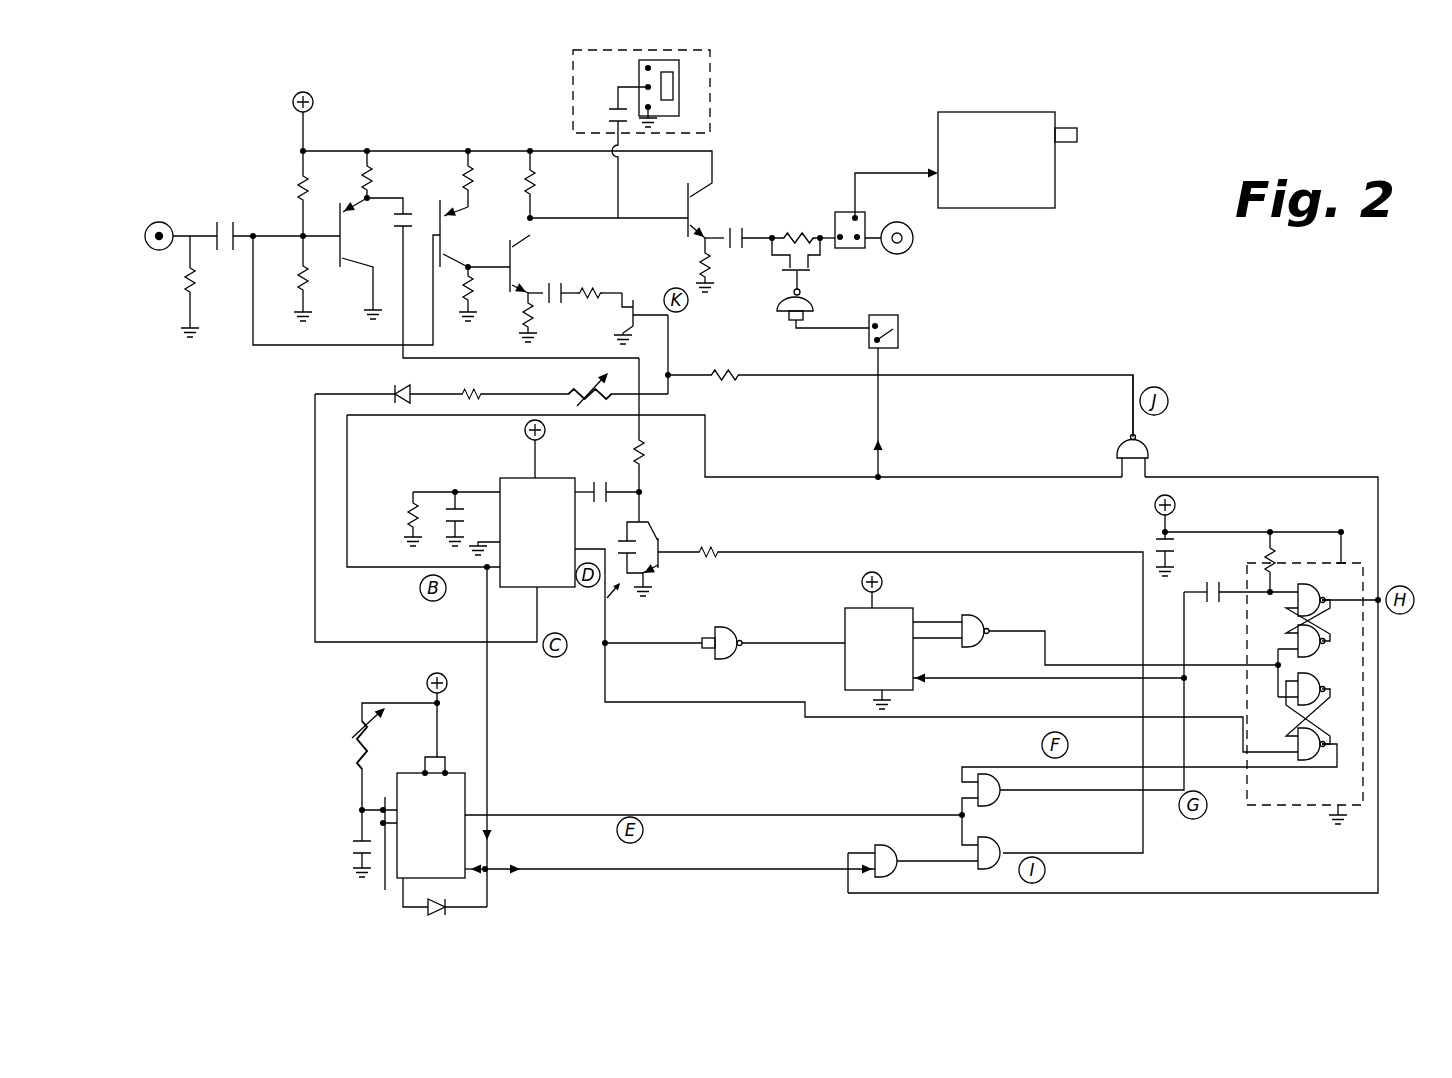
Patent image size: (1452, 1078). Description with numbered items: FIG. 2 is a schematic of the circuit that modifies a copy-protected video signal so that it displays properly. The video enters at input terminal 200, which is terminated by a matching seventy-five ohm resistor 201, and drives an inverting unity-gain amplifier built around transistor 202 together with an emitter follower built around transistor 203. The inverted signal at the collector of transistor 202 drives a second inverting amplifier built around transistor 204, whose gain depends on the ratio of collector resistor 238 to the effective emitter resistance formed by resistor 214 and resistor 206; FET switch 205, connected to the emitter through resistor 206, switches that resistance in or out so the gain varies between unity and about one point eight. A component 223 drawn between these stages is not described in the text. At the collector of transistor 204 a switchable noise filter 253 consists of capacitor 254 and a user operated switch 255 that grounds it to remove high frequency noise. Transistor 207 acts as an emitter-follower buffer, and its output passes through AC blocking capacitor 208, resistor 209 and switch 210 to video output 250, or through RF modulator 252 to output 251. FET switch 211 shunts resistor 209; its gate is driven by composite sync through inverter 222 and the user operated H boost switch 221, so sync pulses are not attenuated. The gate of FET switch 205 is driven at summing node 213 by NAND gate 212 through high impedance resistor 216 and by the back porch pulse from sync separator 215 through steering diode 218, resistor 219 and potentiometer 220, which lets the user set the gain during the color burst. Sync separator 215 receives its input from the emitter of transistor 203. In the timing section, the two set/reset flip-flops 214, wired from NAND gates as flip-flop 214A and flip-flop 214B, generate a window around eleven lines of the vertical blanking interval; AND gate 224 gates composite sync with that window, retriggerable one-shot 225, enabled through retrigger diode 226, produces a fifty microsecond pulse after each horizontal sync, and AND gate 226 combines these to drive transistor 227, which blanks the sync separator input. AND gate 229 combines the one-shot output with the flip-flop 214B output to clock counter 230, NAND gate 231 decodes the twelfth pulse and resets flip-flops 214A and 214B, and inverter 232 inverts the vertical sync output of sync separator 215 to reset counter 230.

The input terminal 200 is at (155, 222).
The matching resistor 201 is at (185, 300).
The transistor 202 is at (448, 229).
The transistor 203 is at (361, 258).
The transistor 204 is at (520, 262).
The FET switch 205 is at (633, 300).
The resistor 206 is at (592, 283).
The transistor 207 is at (714, 185).
The AC blocking capacitor 208 is at (737, 226).
The resistor 209 is at (800, 230).
The switch 210 is at (835, 215).
The FET switch 211 is at (812, 268).
The NAND gate 212 is at (1150, 448).
The summing node 213 is at (670, 373).
The set/reset flip-flops 214 is at (535, 322).
The flip-flop 214A is at (1327, 630).
The flip-flop 214B is at (1328, 714).
The sync separator 215 is at (513, 478).
The resistor 216 is at (742, 378).
The steering diode 218 is at (393, 388).
The resistor 219 is at (470, 392).
The variable attenuation potentiometer 220 is at (565, 392).
The switch 221 is at (900, 326).
The inverter 222 is at (785, 306).
The capacitor 223 is at (408, 210).
The AND gate 224 is at (895, 852).
The retriggerable one-shot 225 is at (622, 545).
The AND gate 226 is at (1004, 845).
The transistor 227 is at (657, 537).
The AND gate 229 is at (1000, 800).
The counter 230 is at (897, 606).
The NAND gate 231 is at (975, 613).
The inverter 232 is at (728, 626).
The collector resistor 238 is at (535, 200).
The video output 250 is at (915, 238).
The output 251 is at (1062, 128).
The RF modulator 252 is at (1010, 172).
The switchable noise filter 253 is at (712, 112).
The capacitor 254 is at (605, 114).
The user operated switch 255 is at (680, 85).